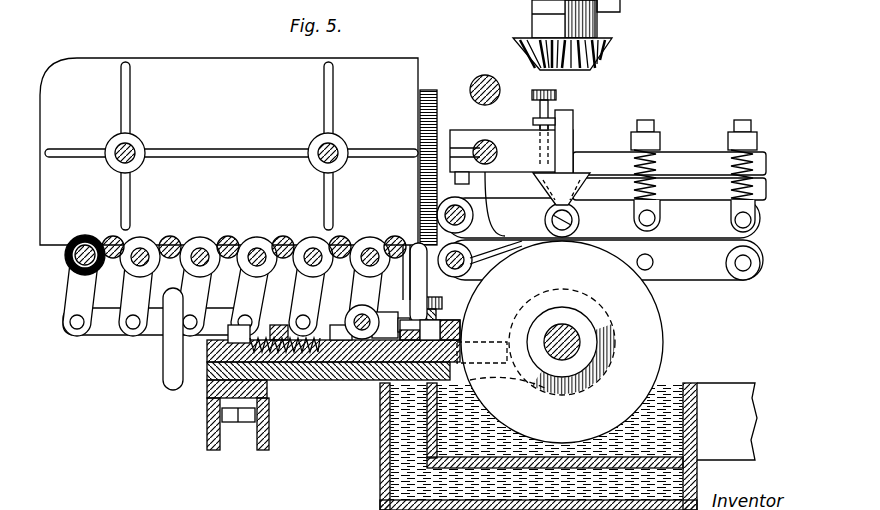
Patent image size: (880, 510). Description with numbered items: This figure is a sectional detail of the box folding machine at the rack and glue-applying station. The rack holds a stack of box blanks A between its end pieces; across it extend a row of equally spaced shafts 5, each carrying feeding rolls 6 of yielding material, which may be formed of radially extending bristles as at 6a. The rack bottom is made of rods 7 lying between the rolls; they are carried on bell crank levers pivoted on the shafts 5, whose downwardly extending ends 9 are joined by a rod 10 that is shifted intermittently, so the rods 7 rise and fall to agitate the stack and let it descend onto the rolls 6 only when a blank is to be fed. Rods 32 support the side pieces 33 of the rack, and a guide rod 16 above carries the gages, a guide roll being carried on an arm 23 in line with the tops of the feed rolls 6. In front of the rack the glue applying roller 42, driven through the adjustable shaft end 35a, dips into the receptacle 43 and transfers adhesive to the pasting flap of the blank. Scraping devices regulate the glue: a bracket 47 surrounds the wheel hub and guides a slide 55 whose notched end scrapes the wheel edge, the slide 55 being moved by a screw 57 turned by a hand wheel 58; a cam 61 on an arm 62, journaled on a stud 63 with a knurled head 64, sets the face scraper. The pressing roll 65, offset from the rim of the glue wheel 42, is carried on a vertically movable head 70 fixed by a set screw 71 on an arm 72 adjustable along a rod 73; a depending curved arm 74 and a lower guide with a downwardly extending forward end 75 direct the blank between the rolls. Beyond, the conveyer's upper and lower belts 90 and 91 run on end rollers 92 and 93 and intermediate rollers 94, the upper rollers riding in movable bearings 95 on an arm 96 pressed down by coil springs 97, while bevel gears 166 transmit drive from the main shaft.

The shaft 5 is at (146, 250).
The feeding roll 6 is at (202, 250).
The bristle feeding roll 6a is at (85, 238).
The rod 7 is at (238, 245).
The downwardly extending end 9 is at (81, 295).
The rod 10 is at (158, 321).
The guide rod 16 is at (483, 75).
The arm 23 is at (426, 278).
The rod 32 is at (338, 150).
The side piece 33 is at (229, 151).
The longitudinally adjustable end 35a is at (572, 332).
The glue applying roller 42 is at (658, 336).
The receptacle 43 is at (688, 385).
The bracket 47 is at (286, 400).
The slide 55 is at (357, 362).
The screw 57 is at (306, 356).
The hand wheel 58 is at (172, 385).
The cam 61 is at (455, 340).
The arm 62 is at (412, 322).
The stud 63 is at (482, 353).
The knurled head 64 is at (460, 322).
The pressing roll 65 is at (562, 242).
The vertically movable head 70 is at (573, 140).
The set screw 71 is at (557, 95).
The arm 72 is at (511, 183).
The rod 73 is at (488, 142).
The depending curved arm 74 is at (495, 230).
The downwardly extending forward end 75 is at (500, 262).
The upper belt 90 is at (690, 200).
The lower belt 91 is at (708, 280).
The roller 92 is at (752, 222).
The roller 93 is at (747, 270).
The roller 94 is at (640, 218).
The movable bearing 95 is at (657, 212).
The arm 96 is at (669, 164).
The coil spring 97 is at (655, 160).
The bevel gear wheels 166 is at (606, 45).
The box blanks A is at (426, 90).